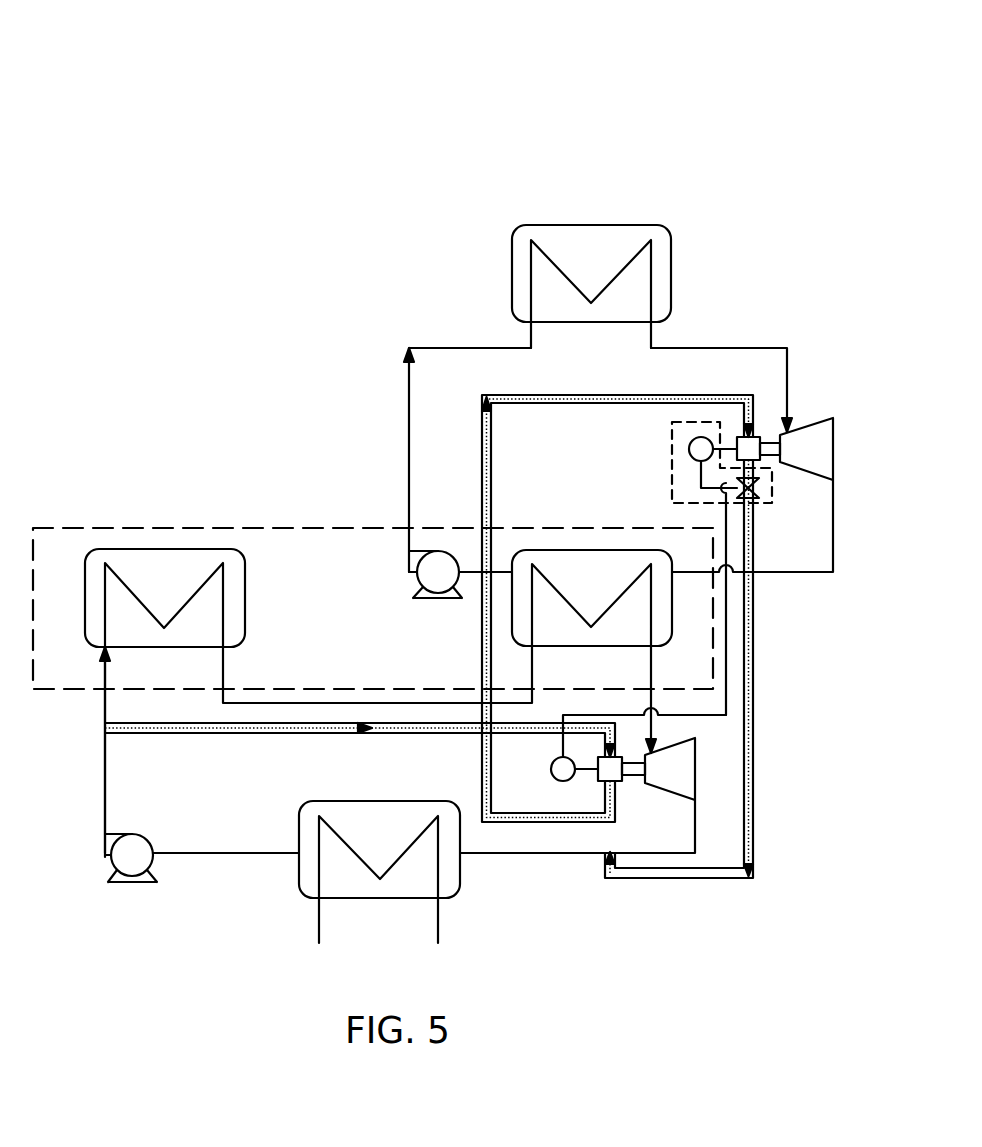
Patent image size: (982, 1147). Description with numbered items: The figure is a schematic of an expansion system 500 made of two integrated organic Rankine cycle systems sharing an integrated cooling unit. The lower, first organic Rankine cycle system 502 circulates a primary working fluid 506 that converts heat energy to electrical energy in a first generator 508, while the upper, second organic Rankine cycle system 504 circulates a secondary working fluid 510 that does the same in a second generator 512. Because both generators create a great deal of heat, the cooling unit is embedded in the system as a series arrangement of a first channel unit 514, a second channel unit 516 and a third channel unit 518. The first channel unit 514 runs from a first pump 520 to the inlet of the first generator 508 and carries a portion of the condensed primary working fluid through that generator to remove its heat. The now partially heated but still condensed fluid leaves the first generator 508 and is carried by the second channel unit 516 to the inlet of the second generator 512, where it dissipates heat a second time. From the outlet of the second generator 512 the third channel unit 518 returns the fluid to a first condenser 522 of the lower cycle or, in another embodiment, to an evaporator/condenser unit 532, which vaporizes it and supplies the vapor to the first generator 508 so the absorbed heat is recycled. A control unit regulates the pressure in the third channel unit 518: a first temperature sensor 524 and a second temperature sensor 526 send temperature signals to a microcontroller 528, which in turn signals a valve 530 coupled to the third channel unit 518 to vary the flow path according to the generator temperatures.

The expansion system 500 is at (702, 85).
The first organic Rankine cycle system 502 is at (175, 894).
The second organic Rankine cycle system 504 is at (382, 295).
The primary working fluid 506 is at (105, 780).
The first generator 508 is at (624, 781).
The secondary working fluid 510 is at (409, 443).
The second generator 512 is at (737, 438).
The first channel unit 514 is at (125, 723).
The second channel unit 516 is at (528, 822).
The third channel unit 518 is at (755, 700).
The first pump 520 is at (105, 843).
The first condenser 522 is at (380, 898).
The first temperature sensor 524 is at (564, 781).
The second temperature sensor 526 is at (689, 450).
The microcontroller 528 is at (721, 483).
The valve 530 is at (760, 488).
The evaporator/condenser unit 532 is at (560, 647).